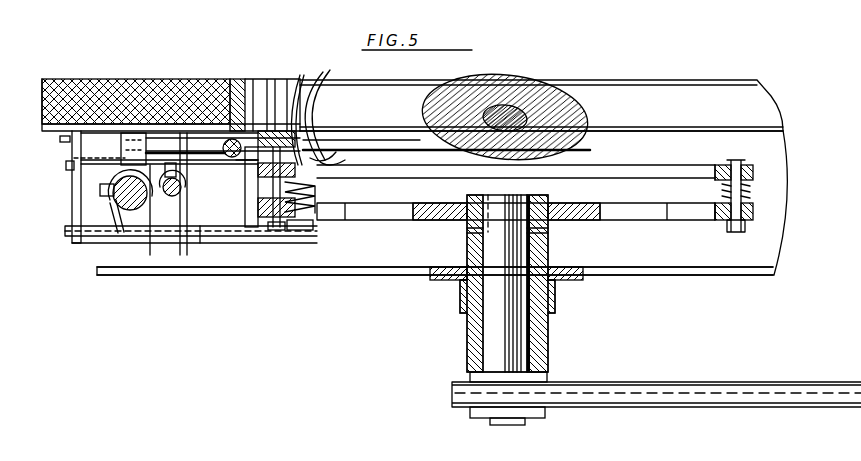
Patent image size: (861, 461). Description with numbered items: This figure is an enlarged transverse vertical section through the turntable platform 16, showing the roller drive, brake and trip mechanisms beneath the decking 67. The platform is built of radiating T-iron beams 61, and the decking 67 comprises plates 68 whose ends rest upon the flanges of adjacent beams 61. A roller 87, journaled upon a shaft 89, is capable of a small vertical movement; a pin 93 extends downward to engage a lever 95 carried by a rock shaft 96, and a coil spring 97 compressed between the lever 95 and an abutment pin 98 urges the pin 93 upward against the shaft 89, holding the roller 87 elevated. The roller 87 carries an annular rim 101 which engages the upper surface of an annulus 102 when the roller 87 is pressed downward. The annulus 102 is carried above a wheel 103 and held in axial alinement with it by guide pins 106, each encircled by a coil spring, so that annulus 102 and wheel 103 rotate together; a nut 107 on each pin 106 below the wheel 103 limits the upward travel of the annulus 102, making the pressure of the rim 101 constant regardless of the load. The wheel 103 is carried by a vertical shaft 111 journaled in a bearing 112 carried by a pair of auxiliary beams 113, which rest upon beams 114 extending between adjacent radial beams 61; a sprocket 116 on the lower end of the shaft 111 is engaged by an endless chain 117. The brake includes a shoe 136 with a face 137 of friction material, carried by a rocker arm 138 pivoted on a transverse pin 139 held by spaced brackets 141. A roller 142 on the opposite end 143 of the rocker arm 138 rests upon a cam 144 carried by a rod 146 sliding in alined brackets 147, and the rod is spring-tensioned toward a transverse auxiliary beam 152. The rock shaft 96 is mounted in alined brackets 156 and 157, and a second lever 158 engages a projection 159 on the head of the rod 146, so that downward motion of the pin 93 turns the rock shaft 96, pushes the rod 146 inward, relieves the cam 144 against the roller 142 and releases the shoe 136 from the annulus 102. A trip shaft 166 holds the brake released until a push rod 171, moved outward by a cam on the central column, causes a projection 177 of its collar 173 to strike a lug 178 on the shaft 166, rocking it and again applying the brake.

The turntable platform 16 is at (659, 76).
The beam 61 is at (700, 130).
The decking 67 is at (175, 72).
The plate 68 is at (236, 139).
The roller 87 is at (485, 81).
The shaft 89 is at (527, 108).
The pin 93 is at (314, 193).
The lever 95 is at (296, 232).
The rock shaft 96 is at (222, 228).
The coil spring 97 is at (316, 200).
The abutment pin 98 is at (334, 160).
The annular rim 101 is at (319, 80).
The annulus 102 is at (727, 167).
The wheel 103 is at (722, 228).
The guide pin 106 is at (716, 178).
The nut 107 is at (748, 232).
The vertical shaft 111 is at (502, 333).
The bearing 112 is at (549, 353).
The auxiliary beam 113 is at (556, 303).
The beam 114 is at (657, 252).
The sprocket 116 is at (457, 408).
The endless chain 117 is at (580, 407).
The shoe 136 is at (282, 140).
The face 137 is at (313, 150).
The rocker arm 138 is at (238, 158).
The pin 139 is at (244, 152).
The bracket 141 is at (246, 128).
The roller 142 is at (132, 133).
The end 143 is at (168, 142).
The cam 144 is at (112, 181).
The rod 146 is at (124, 222).
The bracket 147 is at (112, 184).
The auxiliary beam 152 is at (60, 140).
The bracket 156 is at (72, 240).
The bracket 157 is at (183, 233).
The lever 158 is at (102, 208).
The projection 159 is at (127, 213).
The shaft 166 is at (66, 166).
The push rod 171 is at (167, 218).
The collar 173 is at (183, 197).
The projection 177 is at (150, 222).
The lug 178 is at (176, 172).